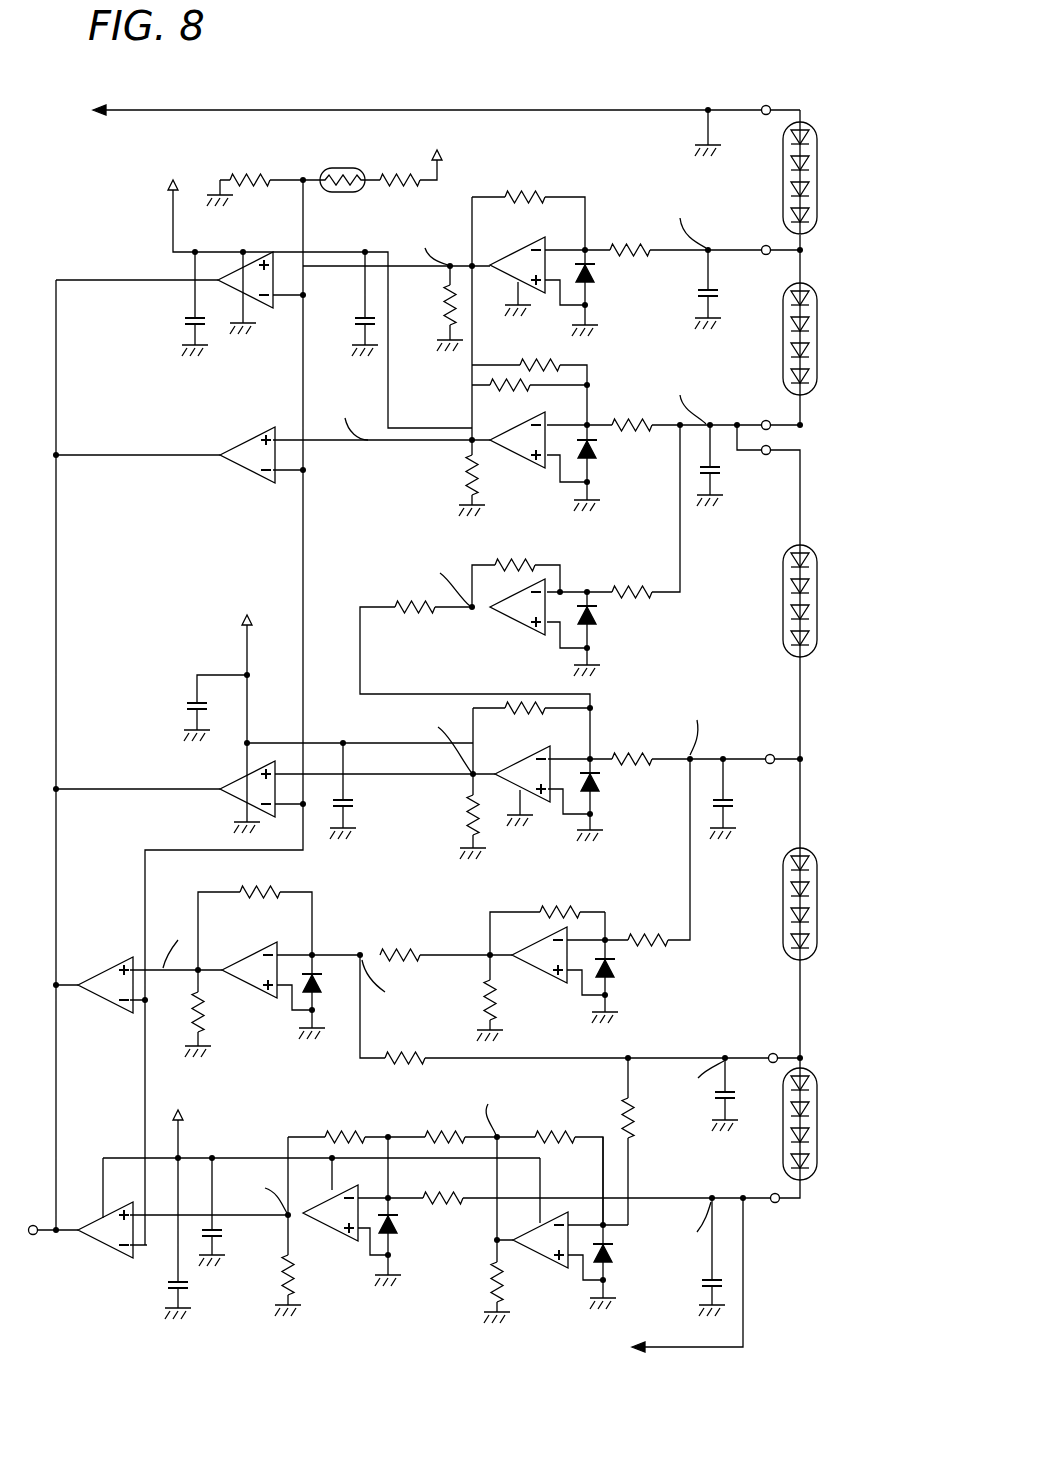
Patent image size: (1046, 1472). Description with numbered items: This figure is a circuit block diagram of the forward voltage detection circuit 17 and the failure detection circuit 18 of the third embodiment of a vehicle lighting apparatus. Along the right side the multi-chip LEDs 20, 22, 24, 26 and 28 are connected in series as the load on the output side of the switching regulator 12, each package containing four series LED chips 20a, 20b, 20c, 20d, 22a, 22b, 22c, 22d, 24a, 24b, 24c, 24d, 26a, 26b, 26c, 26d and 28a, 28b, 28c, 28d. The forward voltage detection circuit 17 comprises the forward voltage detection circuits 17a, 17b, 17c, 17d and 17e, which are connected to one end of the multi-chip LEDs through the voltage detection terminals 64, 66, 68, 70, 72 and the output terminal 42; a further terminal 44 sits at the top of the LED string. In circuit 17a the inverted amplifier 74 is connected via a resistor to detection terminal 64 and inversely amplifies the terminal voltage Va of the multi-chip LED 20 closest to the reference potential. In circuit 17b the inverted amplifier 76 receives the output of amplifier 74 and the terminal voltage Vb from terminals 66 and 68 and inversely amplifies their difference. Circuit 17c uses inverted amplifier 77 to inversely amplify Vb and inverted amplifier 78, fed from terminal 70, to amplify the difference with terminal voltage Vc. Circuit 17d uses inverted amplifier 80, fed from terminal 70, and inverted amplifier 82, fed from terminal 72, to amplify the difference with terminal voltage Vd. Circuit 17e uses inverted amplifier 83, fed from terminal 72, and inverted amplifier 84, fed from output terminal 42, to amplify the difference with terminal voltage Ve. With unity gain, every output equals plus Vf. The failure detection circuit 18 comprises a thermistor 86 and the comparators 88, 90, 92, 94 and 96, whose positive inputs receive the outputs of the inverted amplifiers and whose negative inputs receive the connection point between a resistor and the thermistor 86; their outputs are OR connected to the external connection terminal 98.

The switching regulator 12 is at (424, 732).
The forward voltage detection circuit 17 is at (578, 97).
The forward voltage detection circuit 17a is at (580, 182).
The forward voltage detection circuit 17b is at (604, 480).
The forward voltage detection circuit 17c is at (616, 710).
The forward voltage detection circuit 17d is at (664, 992).
The forward voltage detection circuit 17e is at (654, 1186).
The failure detection circuit 18 is at (308, 97).
The multi-chip LED 20 is at (808, 119).
The LED chip 20a is at (818, 138).
The LED chip 20b is at (818, 163).
The LED chip 20c is at (818, 189).
The LED chip 20d is at (818, 215).
The multi-chip LED 22 is at (808, 281).
The LED chip 22a is at (818, 298).
The LED chip 22b is at (818, 324).
The LED chip 22c is at (818, 350).
The LED chip 22d is at (818, 375).
The multi-chip LED 24 is at (808, 543).
The LED chip 24a is at (818, 562).
The LED chip 24b is at (818, 588).
The LED chip 24c is at (818, 614).
The LED chip 24d is at (818, 640).
The multi-chip LED 26 is at (808, 846).
The LED chip 26a is at (818, 867).
The LED chip 26b is at (818, 893).
The LED chip 26c is at (818, 920).
The LED chip 26d is at (818, 946).
The multi-chip LED 28 is at (808, 1066).
The LED chip 28a is at (818, 1087).
The LED chip 28b is at (818, 1113).
The LED chip 28c is at (818, 1140).
The LED chip 28d is at (818, 1166).
The output terminal 42 is at (779, 1204).
The terminal 44 is at (771, 102).
The voltage detection terminal 64 is at (762, 245).
The voltage detection terminal 66 is at (762, 420).
The voltage detection terminal 68 is at (776, 448).
The voltage detection terminal 70 is at (766, 751).
The voltage detection terminal 72 is at (776, 1051).
The inverted amplifier 74 is at (528, 248).
The inverted amplifier 76 is at (520, 456).
The inverted amplifier 77 is at (520, 624).
The inverted amplifier 78 is at (538, 800).
The inverted amplifier 80 is at (530, 938).
The inverted amplifier 82 is at (266, 948).
The inverted amplifier 83 is at (546, 1262).
The inverted amplifier 84 is at (328, 1238).
The thermistor 86 is at (345, 170).
The comparator 88 is at (262, 309).
The comparator 90 is at (252, 443).
The comparator 92 is at (232, 800).
The comparator 94 is at (108, 968).
The comparator 96 is at (102, 1248).
The external connection terminal 98 is at (38, 1238).